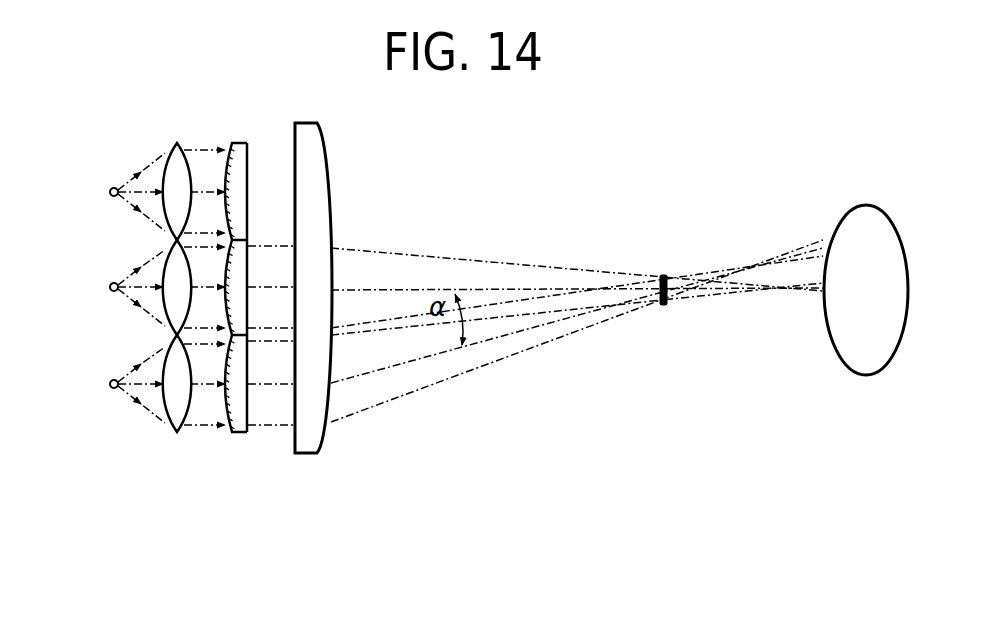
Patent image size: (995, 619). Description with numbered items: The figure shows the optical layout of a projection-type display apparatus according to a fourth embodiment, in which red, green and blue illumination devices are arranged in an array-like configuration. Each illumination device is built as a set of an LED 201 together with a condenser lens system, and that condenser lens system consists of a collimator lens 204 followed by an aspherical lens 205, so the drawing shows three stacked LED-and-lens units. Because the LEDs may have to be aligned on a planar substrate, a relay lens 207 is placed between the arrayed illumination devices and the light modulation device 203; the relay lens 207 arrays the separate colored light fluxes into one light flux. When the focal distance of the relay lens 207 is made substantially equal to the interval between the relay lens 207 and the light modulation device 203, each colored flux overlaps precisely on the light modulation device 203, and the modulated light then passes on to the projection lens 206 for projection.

The LED 201 is at (112, 389).
The collimator lens 204 is at (178, 433).
The aspherical lens 205 is at (242, 433).
The relay lens 207 is at (308, 455).
The light modulation device 203 is at (665, 275).
The projection lens 206 is at (850, 207).